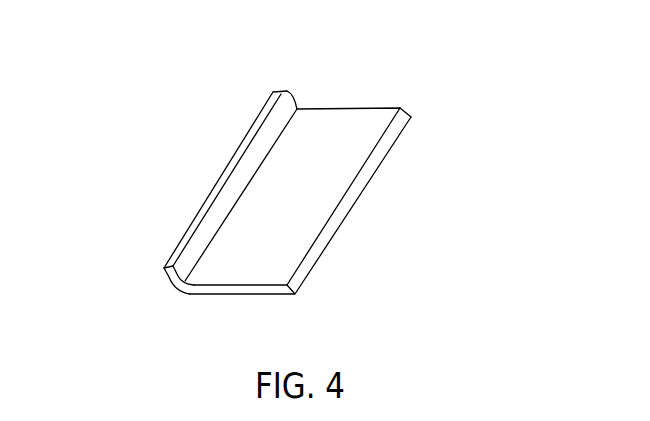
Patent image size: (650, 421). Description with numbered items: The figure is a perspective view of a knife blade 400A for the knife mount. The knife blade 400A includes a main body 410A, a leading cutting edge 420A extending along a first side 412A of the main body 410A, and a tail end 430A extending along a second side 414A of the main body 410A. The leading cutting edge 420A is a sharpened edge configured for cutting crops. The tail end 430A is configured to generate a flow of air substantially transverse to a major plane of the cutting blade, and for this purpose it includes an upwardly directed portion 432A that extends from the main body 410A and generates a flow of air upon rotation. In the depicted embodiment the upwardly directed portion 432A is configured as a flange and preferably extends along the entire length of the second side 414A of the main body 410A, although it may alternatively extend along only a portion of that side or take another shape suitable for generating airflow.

The knife blade 400A is at (313, 193).
The main body 410A is at (292, 193).
The first side 412A is at (410, 105).
The second side 414A is at (297, 92).
The leading cutting edge 420A is at (302, 268).
The tail end 430A is at (157, 197).
The upwardly directed portion 432A is at (170, 277).